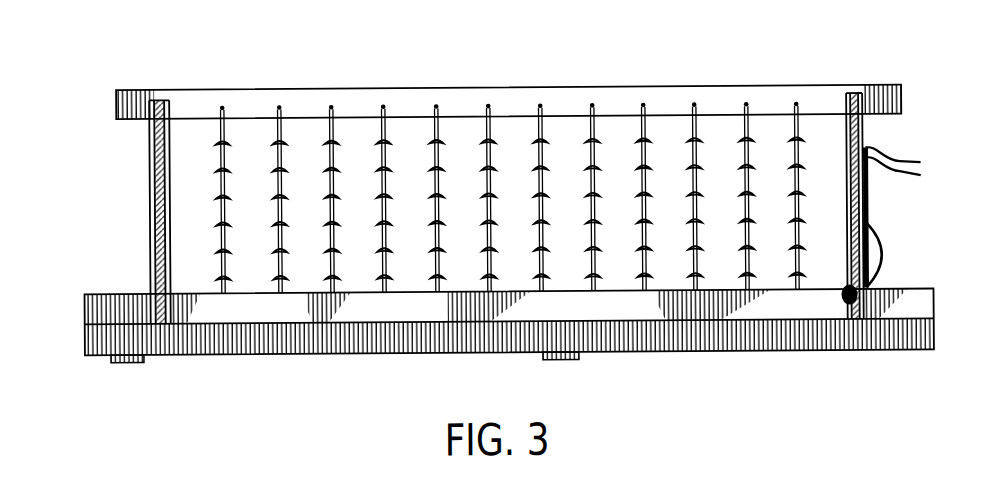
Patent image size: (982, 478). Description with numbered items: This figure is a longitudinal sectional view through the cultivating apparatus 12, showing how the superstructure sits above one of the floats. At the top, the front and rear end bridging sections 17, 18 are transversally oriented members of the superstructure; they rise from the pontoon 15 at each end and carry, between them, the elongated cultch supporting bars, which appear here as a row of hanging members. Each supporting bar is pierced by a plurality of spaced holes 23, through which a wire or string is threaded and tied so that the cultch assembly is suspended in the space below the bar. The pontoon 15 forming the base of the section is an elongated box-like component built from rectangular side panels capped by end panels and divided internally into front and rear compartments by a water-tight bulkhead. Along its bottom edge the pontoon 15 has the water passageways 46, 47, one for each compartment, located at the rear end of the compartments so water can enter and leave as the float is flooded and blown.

The apparatus 12 is at (477, 87).
The pontoon 15 is at (864, 352).
The front end bridging section 17 is at (150, 148).
The rear end bridging section 18 is at (865, 143).
The spaced holes 23 is at (436, 103).
The water passageway 46 is at (580, 358).
The water passageway 47 is at (145, 357).